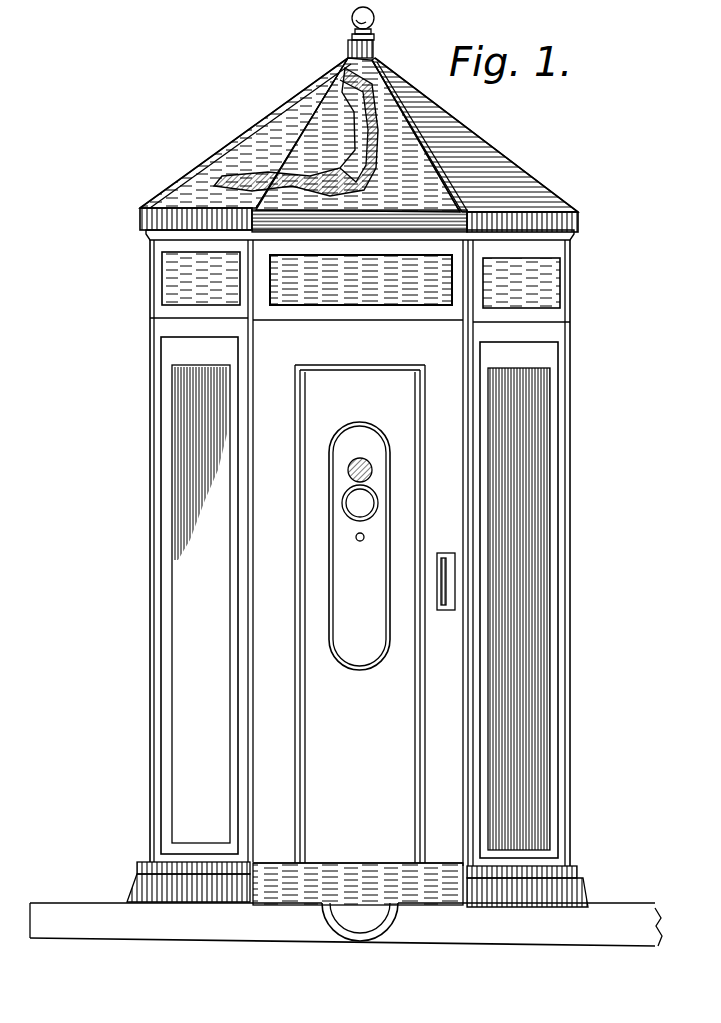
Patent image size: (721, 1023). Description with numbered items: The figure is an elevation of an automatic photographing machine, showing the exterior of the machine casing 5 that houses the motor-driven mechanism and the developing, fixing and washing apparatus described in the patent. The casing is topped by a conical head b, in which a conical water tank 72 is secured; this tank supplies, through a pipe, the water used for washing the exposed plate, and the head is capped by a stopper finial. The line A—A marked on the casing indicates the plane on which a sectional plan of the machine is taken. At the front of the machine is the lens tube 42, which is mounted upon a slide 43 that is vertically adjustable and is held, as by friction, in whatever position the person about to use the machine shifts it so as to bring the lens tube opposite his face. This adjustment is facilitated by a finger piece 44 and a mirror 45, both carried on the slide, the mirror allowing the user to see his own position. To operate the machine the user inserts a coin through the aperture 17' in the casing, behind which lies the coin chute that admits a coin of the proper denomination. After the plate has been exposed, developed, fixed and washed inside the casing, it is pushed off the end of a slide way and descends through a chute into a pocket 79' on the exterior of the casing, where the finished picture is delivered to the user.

The machine casing 5 is at (150, 647).
The conical head b is at (176, 204).
The conical water tank 72 is at (292, 112).
The line A— A is at (148, 241).
The lens tube 42 is at (367, 503).
The slide 43 is at (358, 614).
The finger piece 44 is at (358, 542).
The mirror 45 is at (350, 473).
The aperture 17' is at (445, 602).
The pocket 79' is at (346, 944).